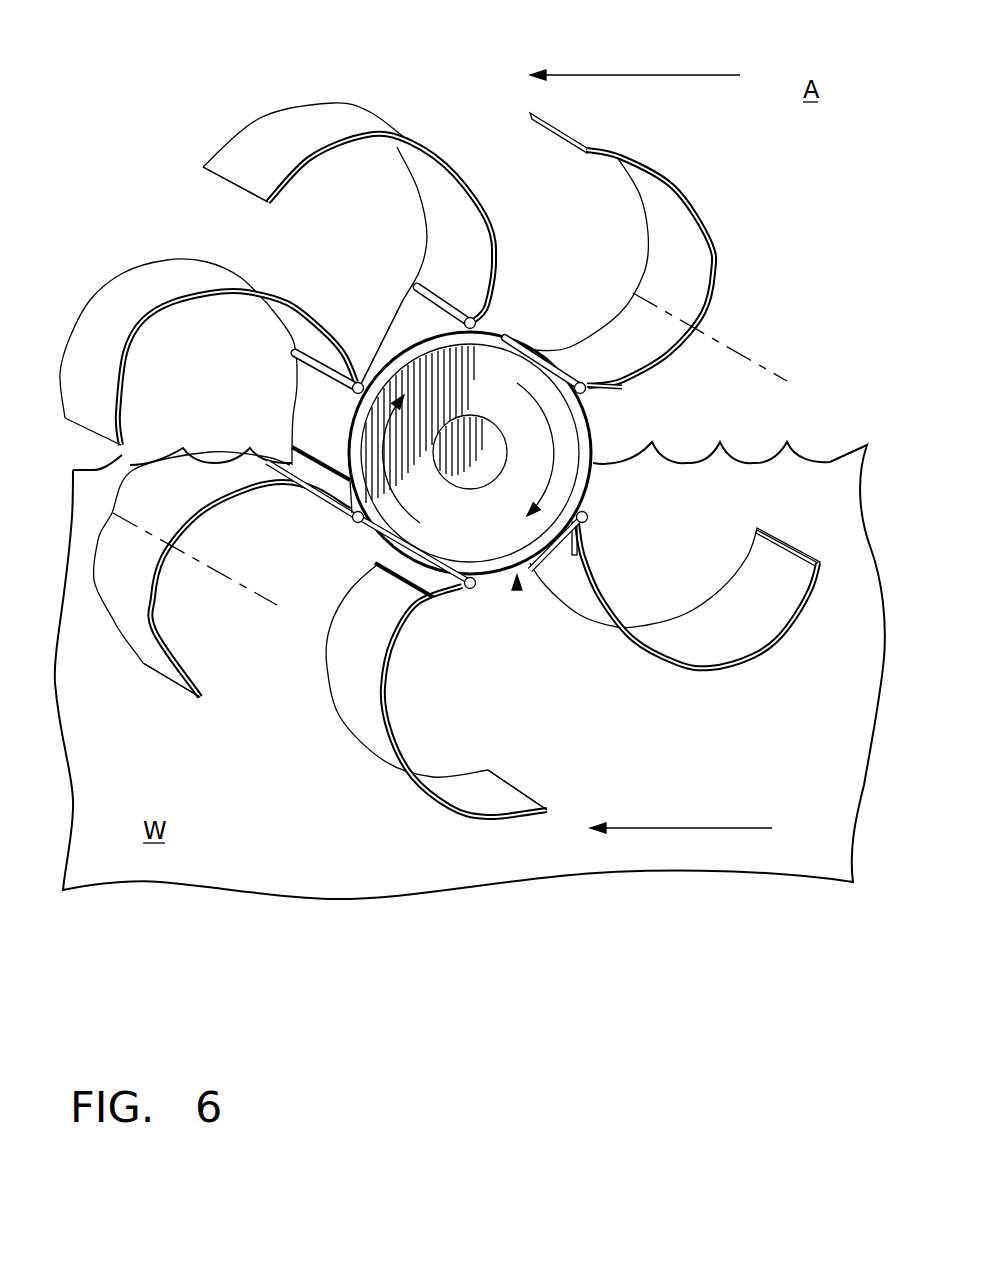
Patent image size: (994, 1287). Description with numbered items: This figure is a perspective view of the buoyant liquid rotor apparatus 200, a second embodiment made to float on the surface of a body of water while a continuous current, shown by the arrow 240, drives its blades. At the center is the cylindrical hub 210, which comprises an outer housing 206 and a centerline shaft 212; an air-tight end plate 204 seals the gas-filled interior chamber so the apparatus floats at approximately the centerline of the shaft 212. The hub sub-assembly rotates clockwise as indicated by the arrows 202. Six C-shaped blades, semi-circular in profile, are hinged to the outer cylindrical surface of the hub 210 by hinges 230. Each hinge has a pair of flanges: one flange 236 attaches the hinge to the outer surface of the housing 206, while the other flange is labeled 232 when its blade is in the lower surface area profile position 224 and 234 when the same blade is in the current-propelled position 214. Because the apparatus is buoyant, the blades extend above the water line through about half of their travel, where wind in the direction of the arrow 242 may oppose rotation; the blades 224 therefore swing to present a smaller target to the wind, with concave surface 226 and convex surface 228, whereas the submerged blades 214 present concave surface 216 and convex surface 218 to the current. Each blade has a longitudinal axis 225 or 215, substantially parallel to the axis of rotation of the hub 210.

The liquid rotor apparatus 200 is at (152, 144).
The arrows 202 is at (400, 506).
The air-tight end plate 204 is at (493, 550).
The outer housing 206 is at (345, 416).
The cylindrical hub 210 is at (517, 580).
The centerline shaft 212 is at (443, 438).
The blades 214 is at (762, 650).
The longitudinal axis 215 is at (227, 577).
The concave surface 216 is at (790, 601).
The convex surface 218 is at (185, 518).
The blades 224 is at (310, 100).
The longitudinal axis 225 is at (758, 366).
The concave surface 226 is at (700, 263).
The convex surface 228 is at (290, 161).
The hinge 230 is at (416, 287).
The hinge flange 232 is at (500, 307).
The hinge flange 234 is at (385, 563).
The hinge flange 236 is at (363, 353).
The arrow 240 is at (723, 829).
The arrow 242 is at (645, 72).